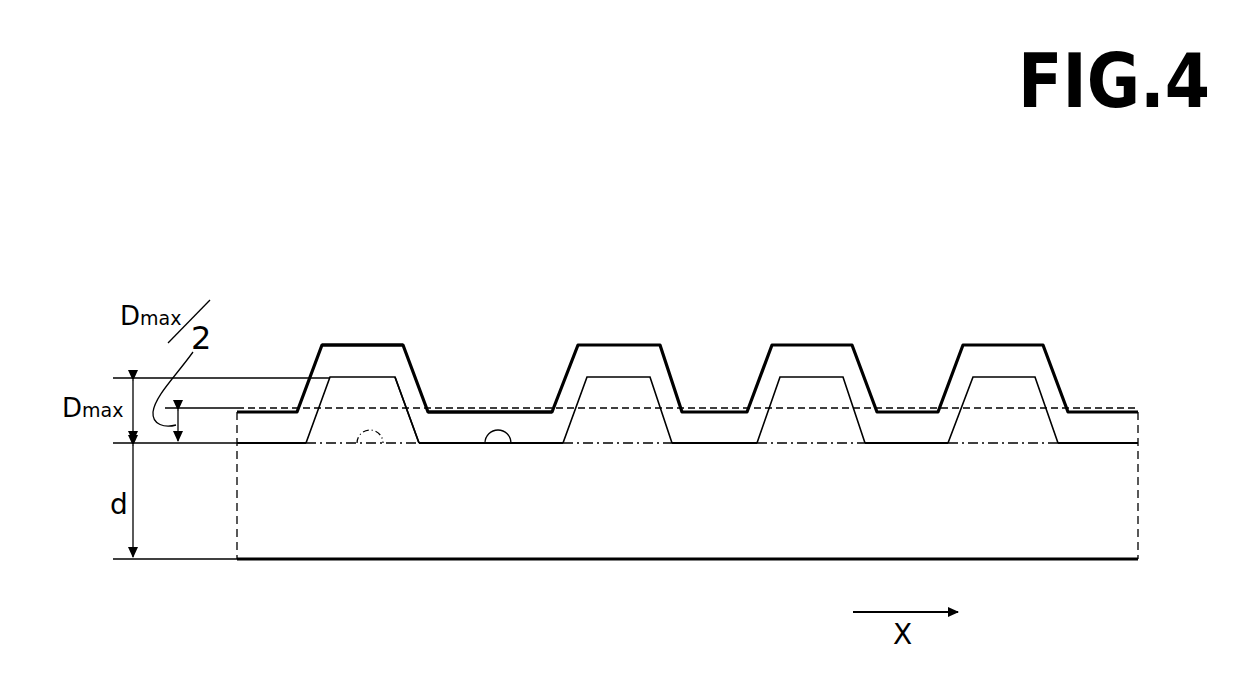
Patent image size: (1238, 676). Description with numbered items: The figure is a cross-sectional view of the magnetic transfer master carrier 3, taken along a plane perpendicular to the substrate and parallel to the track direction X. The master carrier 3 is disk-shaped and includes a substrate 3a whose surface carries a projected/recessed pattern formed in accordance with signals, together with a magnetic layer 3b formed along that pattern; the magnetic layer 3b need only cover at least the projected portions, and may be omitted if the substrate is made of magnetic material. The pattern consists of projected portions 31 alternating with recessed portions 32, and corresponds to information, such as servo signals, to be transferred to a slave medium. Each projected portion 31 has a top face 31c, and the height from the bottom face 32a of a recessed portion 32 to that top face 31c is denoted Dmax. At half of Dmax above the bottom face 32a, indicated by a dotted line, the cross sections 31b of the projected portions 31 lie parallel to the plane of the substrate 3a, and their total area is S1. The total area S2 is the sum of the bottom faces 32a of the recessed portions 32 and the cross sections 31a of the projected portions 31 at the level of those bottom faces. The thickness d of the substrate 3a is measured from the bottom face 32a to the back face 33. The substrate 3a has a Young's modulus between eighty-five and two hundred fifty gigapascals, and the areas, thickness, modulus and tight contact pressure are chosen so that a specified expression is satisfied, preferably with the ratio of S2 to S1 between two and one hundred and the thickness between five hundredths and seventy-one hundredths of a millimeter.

The master carrier 3 is at (328, 221).
The substrate 3a is at (1120, 500).
The magnetic layer 3b is at (1110, 412).
The projected portion 31 is at (350, 392).
The cross section of projected portion 31a is at (383, 440).
The cross section of projected portion 31b is at (390, 403).
The top face 31c is at (402, 352).
The recessed portion 32 is at (487, 412).
The bottom face 32a is at (511, 440).
The back face 33 is at (591, 560).